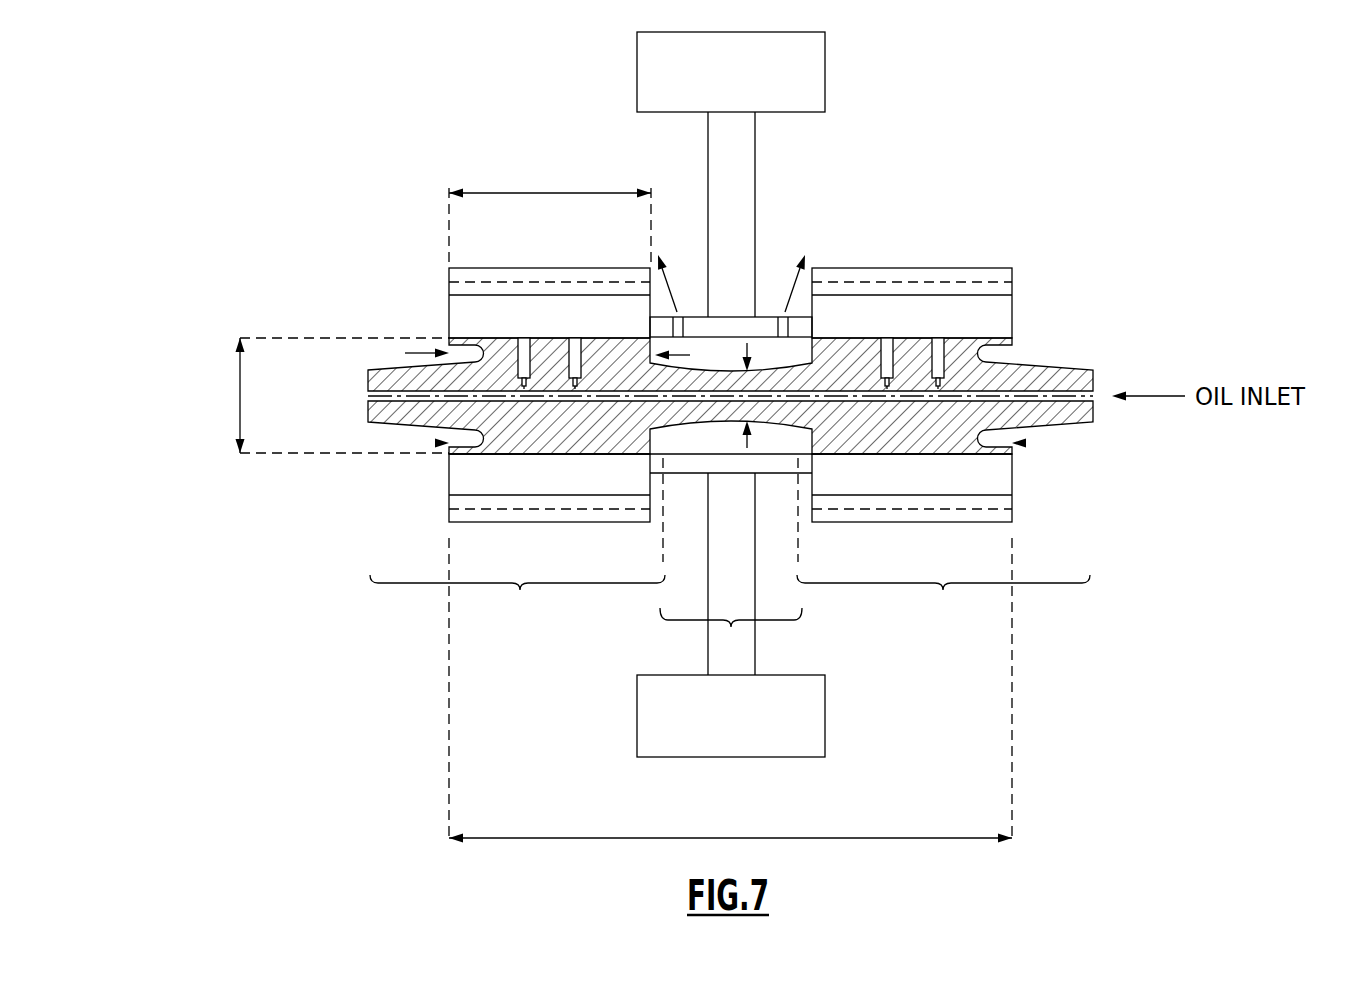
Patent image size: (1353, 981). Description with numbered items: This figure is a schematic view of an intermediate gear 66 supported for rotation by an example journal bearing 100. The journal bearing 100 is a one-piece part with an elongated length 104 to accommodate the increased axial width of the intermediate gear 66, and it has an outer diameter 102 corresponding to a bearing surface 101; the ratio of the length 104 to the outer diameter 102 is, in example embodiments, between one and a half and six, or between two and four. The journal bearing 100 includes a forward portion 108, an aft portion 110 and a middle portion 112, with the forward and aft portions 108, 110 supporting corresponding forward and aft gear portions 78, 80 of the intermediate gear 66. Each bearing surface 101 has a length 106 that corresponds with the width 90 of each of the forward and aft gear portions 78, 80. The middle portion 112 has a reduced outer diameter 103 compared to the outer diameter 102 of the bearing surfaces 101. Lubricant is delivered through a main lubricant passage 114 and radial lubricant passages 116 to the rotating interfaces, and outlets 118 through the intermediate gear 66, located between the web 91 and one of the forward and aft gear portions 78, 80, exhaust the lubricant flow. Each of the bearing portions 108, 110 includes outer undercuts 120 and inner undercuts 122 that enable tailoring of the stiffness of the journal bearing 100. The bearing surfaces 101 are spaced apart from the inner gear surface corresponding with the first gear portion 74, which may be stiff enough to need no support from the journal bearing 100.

The first gear portion 74 is at (817, 62).
The intermediate gear 66 is at (1146, 99).
The width 90 is at (535, 193).
The web 91 is at (735, 178).
The outlets 118 is at (693, 304).
The radial lubricant passages 116 is at (575, 337).
The reduced outer diameter 103 is at (748, 347).
The journal bearing 100 is at (1037, 375).
The main lubricant passage 114 is at (1065, 395).
The length 106 is at (405, 353).
The outer diameter 102 is at (240, 396).
The outer undercuts 120 is at (436, 443).
The forward gear portion 78 is at (504, 488).
The aft gear portion 80 is at (997, 508).
The bearing surface 101 is at (590, 455).
The inner undercuts 122 is at (663, 451).
The forward portion 108 is at (520, 590).
The aft portion 110 is at (943, 590).
The middle portion 112 is at (731, 627).
The length 104 is at (738, 838).